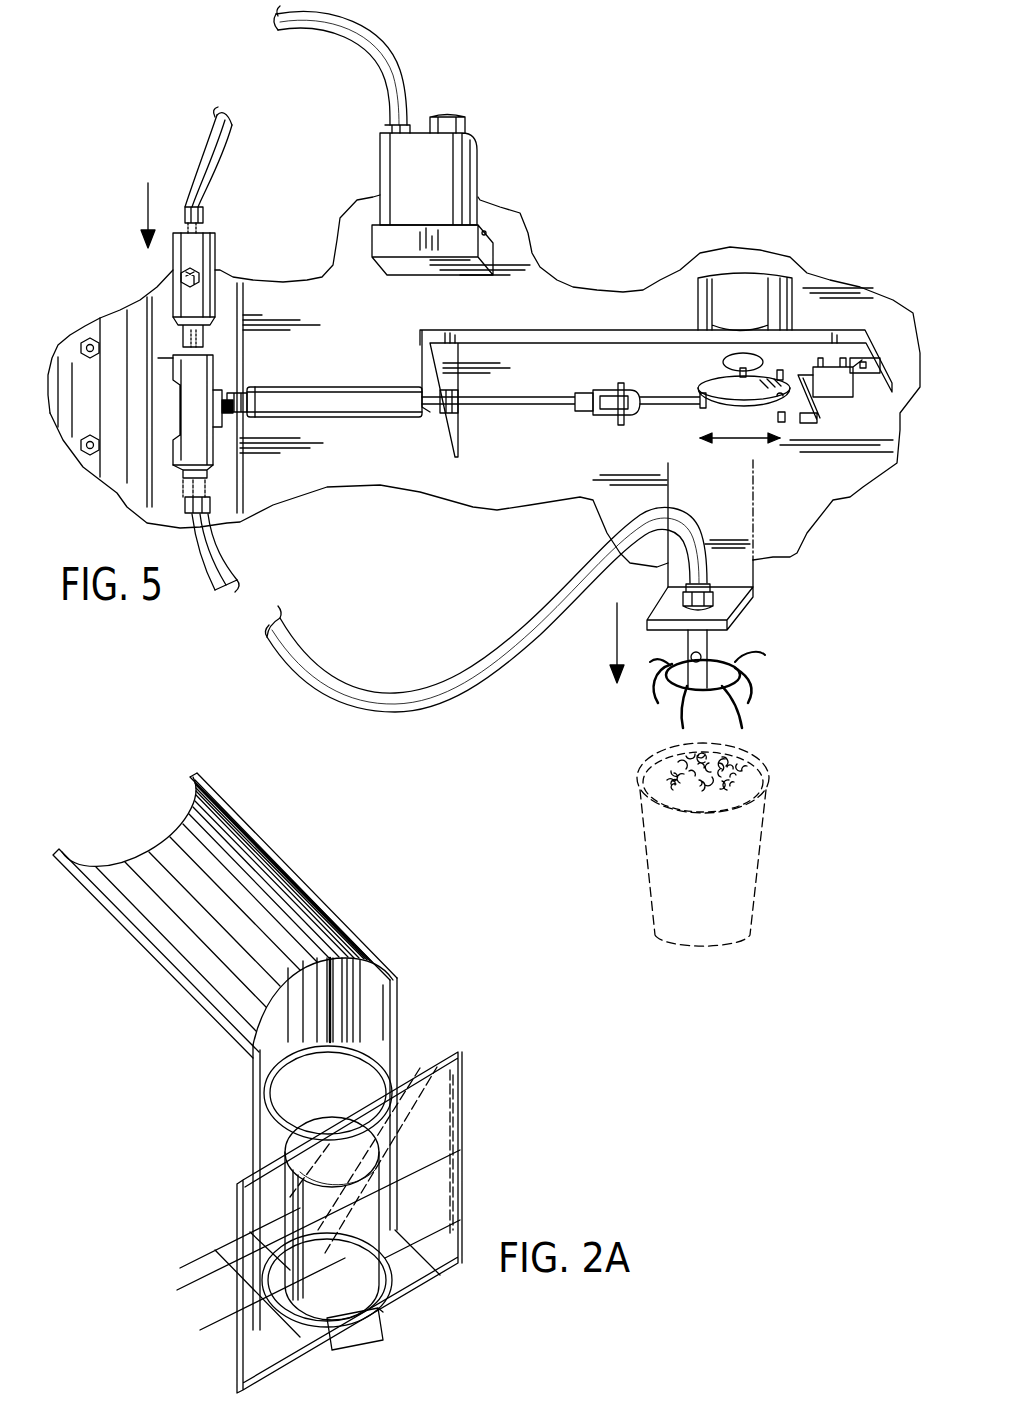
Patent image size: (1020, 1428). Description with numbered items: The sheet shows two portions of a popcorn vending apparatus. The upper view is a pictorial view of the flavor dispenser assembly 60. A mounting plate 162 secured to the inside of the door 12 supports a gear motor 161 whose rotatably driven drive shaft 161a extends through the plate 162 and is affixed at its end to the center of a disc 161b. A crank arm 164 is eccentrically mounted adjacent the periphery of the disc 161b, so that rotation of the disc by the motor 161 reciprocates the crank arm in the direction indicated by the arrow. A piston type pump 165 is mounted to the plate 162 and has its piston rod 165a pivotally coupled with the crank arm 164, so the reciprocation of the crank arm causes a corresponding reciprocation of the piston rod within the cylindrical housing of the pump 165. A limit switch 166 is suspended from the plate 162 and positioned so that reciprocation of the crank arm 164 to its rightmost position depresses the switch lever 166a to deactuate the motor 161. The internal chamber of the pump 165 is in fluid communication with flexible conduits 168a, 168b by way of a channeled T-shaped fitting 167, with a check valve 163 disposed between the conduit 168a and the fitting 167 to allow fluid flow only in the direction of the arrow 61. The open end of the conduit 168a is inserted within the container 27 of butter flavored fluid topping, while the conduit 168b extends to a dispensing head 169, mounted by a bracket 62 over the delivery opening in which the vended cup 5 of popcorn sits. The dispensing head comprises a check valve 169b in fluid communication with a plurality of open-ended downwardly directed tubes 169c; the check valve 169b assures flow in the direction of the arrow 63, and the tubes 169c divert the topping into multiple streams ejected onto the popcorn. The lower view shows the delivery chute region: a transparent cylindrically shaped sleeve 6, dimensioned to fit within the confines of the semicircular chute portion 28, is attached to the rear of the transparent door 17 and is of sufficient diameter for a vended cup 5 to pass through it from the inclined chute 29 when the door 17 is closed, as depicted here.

In FIG. 5, the cup 5 is at (738, 862).
In FIG. 2A, the cup 5 is at (331, 1229).
In FIG. 2A, the transparent cylindrically shaped sleeve 6 is at (407, 1047).
In FIG. 5, the door 12 is at (583, 305).
In FIG. 2A, the transparent door 17 is at (443, 1143).
In FIG. 5, the container 27 is at (446, 158).
In FIG. 2A, the semicircular chute portion 28 is at (250, 1088).
In FIG. 2A, the inclined chute 29 is at (197, 822).
In FIG. 5, the flavor dispenser assembly 60 is at (654, 116).
In FIG. 5, the arrow 61 is at (147, 207).
In FIG. 5, the bracket 62 is at (735, 568).
In FIG. 5, the arrow 63 is at (613, 648).
In FIG. 5, the gear motor 161 is at (745, 291).
In FIG. 5, the drive shaft 161a is at (719, 387).
In FIG. 5, the disc 161b is at (713, 393).
In FIG. 5, the mounting plate 162 is at (490, 348).
In FIG. 5, the check valve 163 is at (207, 248).
In FIG. 5, the crank arm 164 is at (653, 413).
In FIG. 5, the piston type pump 165 is at (358, 402).
In FIG. 5, the piston rod 165a is at (510, 406).
In FIG. 5, the limit switch 166 is at (840, 393).
In FIG. 5, the switch lever 166a is at (817, 420).
In FIG. 5, the channeled T-shaped fitting 167 is at (195, 368).
In FIG. 5, the flexible conduit 168a is at (380, 58).
In FIG. 5, the flexible conduit 168b is at (216, 551).
In FIG. 5, the dispensing head 169 is at (803, 689).
In FIG. 5, the check valve 169b is at (677, 676).
In FIG. 5, the open-ended downwardly directed tubes 169c is at (742, 715).